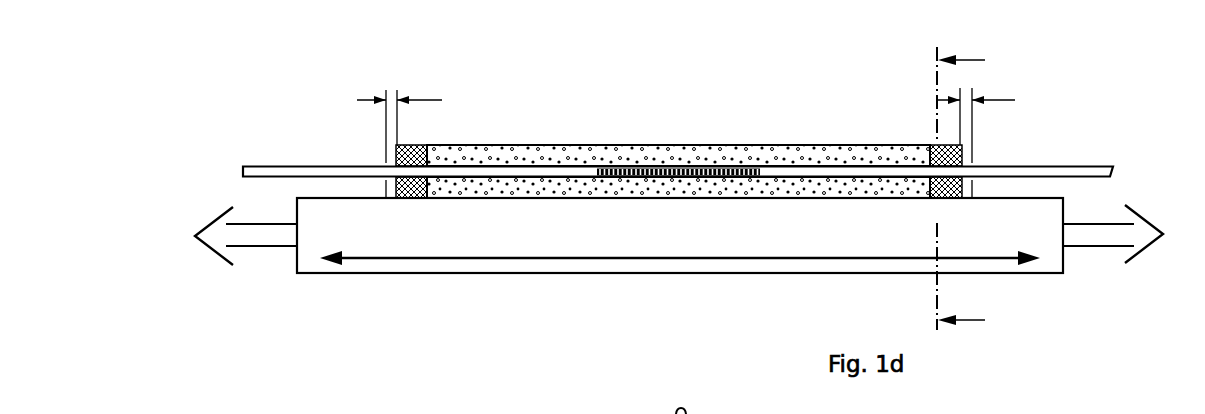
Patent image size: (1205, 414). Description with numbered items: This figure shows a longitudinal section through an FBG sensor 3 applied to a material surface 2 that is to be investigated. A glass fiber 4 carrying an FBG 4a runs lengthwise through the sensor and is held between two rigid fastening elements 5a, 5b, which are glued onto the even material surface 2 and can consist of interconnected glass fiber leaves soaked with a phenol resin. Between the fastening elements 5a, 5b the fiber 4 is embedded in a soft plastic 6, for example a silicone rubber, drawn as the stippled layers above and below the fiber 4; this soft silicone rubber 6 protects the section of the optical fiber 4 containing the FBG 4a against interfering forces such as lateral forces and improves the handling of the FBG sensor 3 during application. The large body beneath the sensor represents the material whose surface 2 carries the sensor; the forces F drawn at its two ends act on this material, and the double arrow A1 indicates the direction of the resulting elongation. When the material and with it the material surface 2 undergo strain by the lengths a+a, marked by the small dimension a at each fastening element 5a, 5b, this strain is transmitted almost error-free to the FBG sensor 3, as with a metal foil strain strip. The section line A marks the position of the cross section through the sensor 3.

The material surface 2 is at (300, 192).
The FBG sensor 3 is at (592, 118).
The glass fiber 4 is at (1050, 166).
The FBG 4a is at (676, 167).
The rigid fastening element 5a is at (412, 145).
The rigid fastening element 5b is at (938, 143).
The soft plastic 6 is at (770, 152).
The strain length a is at (686, 136).
The section line A- A is at (961, 181).
The stretching direction A1 is at (447, 259).
The tensile force F is at (681, 235).